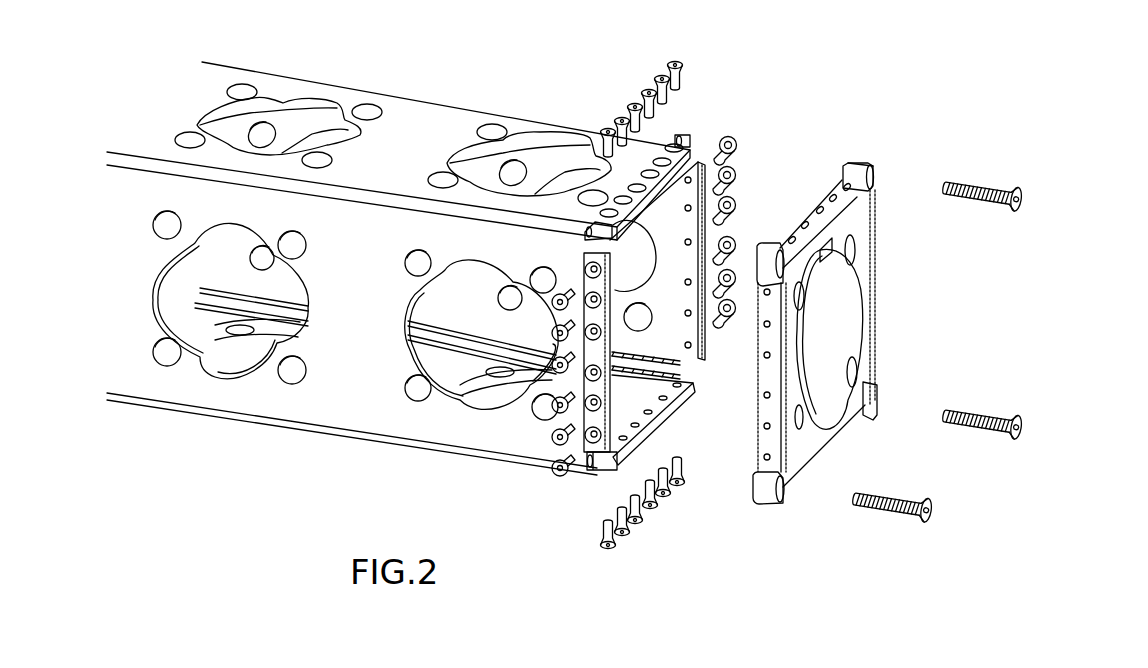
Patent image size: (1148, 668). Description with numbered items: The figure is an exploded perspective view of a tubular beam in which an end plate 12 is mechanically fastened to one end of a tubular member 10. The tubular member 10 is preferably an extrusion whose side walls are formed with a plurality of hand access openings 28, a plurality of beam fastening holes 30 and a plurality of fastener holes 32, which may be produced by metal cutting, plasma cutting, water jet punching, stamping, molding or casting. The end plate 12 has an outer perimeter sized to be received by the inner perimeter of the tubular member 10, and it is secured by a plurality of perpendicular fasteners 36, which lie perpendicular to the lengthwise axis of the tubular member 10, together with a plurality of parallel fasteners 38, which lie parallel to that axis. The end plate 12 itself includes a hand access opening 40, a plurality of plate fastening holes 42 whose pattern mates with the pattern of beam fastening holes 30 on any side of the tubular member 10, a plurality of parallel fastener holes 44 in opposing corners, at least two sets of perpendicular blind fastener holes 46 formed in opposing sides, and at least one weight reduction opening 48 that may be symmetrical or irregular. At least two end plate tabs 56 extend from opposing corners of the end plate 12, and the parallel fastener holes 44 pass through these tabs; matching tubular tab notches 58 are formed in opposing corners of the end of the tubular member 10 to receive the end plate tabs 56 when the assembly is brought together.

The tubular member 10 is at (422, 96).
The end plate 12 is at (872, 360).
The hand access openings 28 is at (472, 425).
The beam fastening holes 30 is at (408, 420).
The fastener holes 32 is at (683, 141).
The perpendicular fasteners 36 is at (680, 66).
The parallel fasteners 38 is at (1012, 194).
The hand access opening 40 is at (826, 418).
The plate fastening holes 42 is at (856, 385).
The parallel fastener holes 44 is at (866, 165).
The perpendicular blind fastener holes 46 is at (850, 189).
The weight reduction opening 48 is at (834, 246).
The end plate tabs 56 is at (856, 164).
The tubular tab notches 58 is at (683, 138).